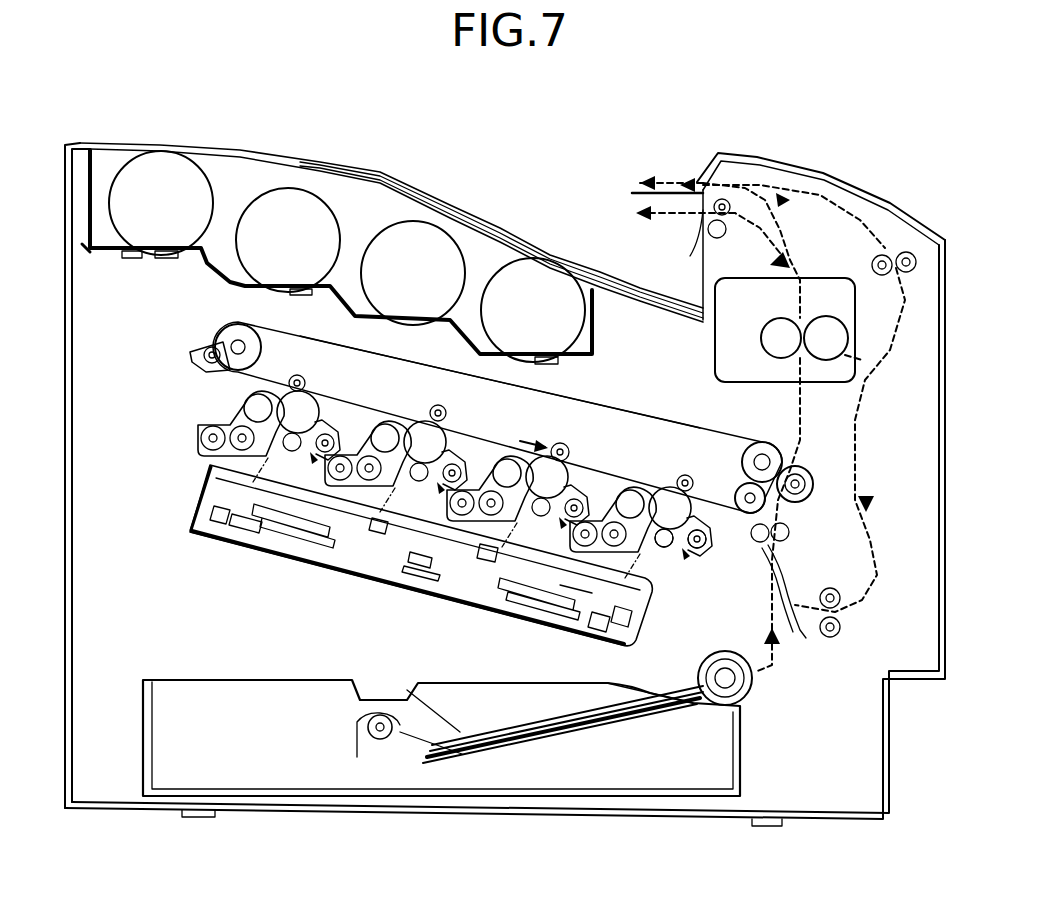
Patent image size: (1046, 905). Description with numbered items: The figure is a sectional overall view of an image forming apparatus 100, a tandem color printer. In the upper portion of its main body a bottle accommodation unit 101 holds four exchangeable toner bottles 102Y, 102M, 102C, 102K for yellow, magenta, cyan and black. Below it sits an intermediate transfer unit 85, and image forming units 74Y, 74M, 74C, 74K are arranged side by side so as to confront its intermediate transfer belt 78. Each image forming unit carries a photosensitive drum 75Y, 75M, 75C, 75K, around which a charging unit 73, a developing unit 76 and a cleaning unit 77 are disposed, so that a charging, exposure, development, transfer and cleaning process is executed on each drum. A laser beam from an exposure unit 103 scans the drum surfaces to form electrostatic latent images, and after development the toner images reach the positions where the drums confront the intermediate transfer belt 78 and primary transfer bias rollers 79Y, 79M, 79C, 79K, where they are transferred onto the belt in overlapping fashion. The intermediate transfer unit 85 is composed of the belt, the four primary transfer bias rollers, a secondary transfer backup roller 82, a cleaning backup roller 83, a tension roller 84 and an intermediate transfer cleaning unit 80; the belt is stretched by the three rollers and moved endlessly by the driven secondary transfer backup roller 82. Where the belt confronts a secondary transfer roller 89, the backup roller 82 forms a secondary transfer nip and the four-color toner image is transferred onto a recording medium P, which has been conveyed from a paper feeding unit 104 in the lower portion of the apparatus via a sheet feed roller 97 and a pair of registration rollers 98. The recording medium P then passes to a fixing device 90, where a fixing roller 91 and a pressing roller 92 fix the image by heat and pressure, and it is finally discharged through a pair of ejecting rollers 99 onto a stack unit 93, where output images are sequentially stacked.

The image forming apparatus 100 is at (352, 156).
The stack unit 93 is at (495, 195).
The pair of ejecting rollers 99 is at (712, 226).
The fixing device 90 is at (818, 280).
The fixing roller 91 is at (772, 322).
The pressing roller 92 is at (836, 346).
The bottle accommodation unit 101 is at (222, 284).
The toner bottle 102Y is at (161, 228).
The toner bottle 102M is at (292, 270).
The toner bottle 102C is at (387, 292).
The toner bottle 102K is at (528, 344).
The intermediate transfer cleaning unit 80 is at (188, 352).
The cleaning backup roller 83 is at (228, 372).
The intermediate transfer belt 78 is at (400, 356).
The intermediate transfer unit 85 is at (637, 412).
The tension roller 84 is at (742, 443).
The secondary transfer backup roller 82 is at (770, 440).
The secondary transfer roller 89 is at (815, 498).
The primary transfer bias roller 79Y is at (308, 383).
The primary transfer bias roller 79M is at (450, 413).
The primary transfer bias roller 79C is at (572, 452).
The primary transfer bias roller 79K is at (683, 474).
The photosensitive drum 75Y is at (313, 420).
The photosensitive drum 75M is at (442, 450).
The photosensitive drum 75C is at (563, 485).
The photosensitive drum 75K is at (686, 516).
The image forming unit 74Y is at (205, 474).
The image forming unit 74M is at (412, 497).
The image forming unit 74C is at (494, 528).
The image forming unit 74K is at (657, 562).
The cleaning unit 77 is at (705, 543).
The charging unit 73 is at (658, 532).
The exposure unit 103 is at (342, 592).
The developing unit 76 is at (585, 592).
The paper feeding unit 104 is at (417, 718).
The recording medium P is at (512, 735).
The sheet feed roller 97 is at (746, 697).
The pair of registration rollers 98 is at (790, 612).